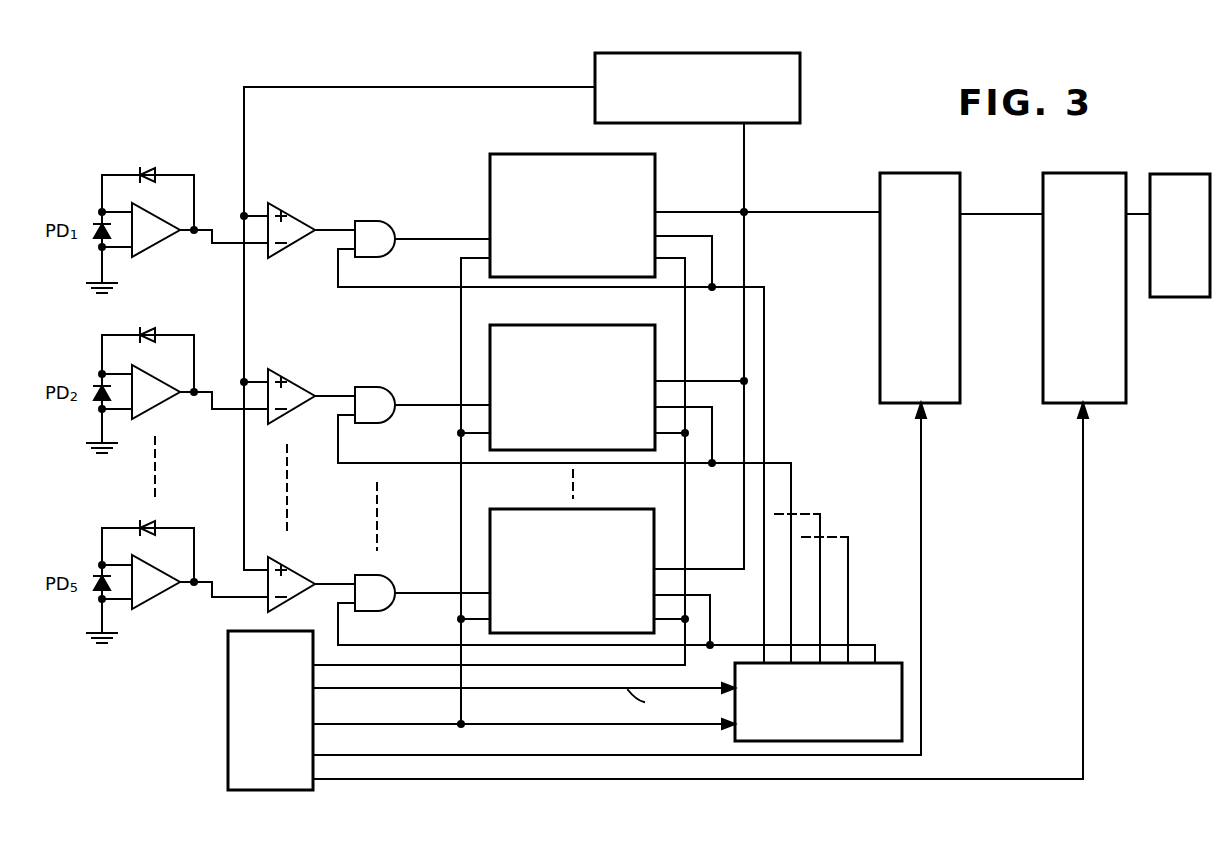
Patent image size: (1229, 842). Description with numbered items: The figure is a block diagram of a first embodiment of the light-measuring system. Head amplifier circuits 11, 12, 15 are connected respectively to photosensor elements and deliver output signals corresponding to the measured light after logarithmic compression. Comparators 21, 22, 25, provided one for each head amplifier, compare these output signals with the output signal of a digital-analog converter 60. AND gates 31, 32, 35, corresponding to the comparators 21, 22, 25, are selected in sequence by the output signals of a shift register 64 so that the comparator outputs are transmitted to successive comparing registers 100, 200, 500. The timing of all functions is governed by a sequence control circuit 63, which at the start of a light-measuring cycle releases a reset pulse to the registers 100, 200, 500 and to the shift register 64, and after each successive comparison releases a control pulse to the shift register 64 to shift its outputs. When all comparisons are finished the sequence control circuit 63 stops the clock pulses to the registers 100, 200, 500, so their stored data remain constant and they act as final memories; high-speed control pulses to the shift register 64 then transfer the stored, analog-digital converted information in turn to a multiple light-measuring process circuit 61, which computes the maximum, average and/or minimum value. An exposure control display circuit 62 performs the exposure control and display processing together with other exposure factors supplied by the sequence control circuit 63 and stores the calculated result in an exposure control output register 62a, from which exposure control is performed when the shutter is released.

The head amplifier circuit 11 is at (158, 243).
The head amplifier circuit 12 is at (155, 406).
The head amplifier circuit 15 is at (150, 596).
The comparator 21 is at (288, 215).
The comparator 22 is at (288, 380).
The comparator 25 is at (290, 569).
The AND gate 31 is at (373, 221).
The AND gate 32 is at (373, 387).
The AND gate 35 is at (375, 576).
The comparing register 100 is at (533, 154).
The comparing register 200 is at (540, 325).
The comparing register 500 is at (540, 509).
The digital-analog converter 60 is at (800, 85).
The multiple light-measuring process circuit 61 is at (900, 173).
The exposure control display circuit 62 is at (1070, 173).
The exposure control output register 62a is at (1185, 174).
The sequence control circuit 63 is at (228, 663).
The shift register 64 is at (890, 663).